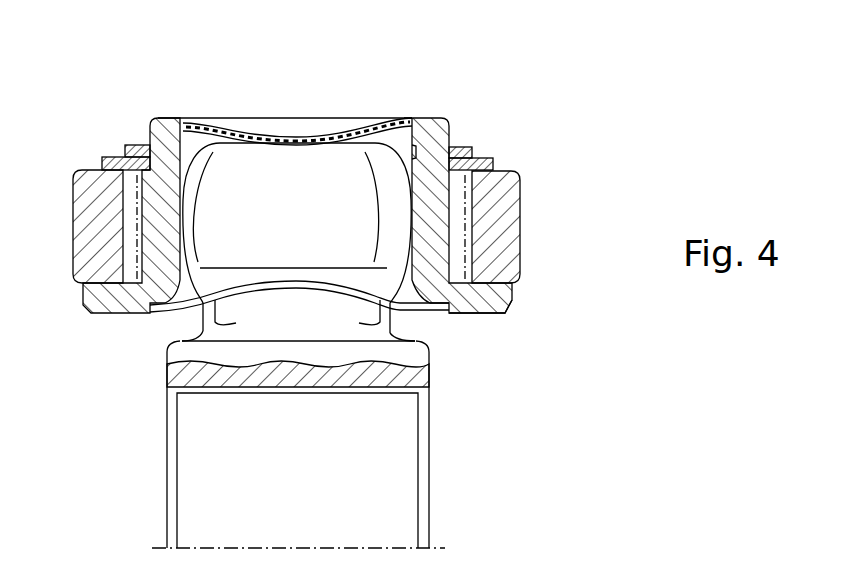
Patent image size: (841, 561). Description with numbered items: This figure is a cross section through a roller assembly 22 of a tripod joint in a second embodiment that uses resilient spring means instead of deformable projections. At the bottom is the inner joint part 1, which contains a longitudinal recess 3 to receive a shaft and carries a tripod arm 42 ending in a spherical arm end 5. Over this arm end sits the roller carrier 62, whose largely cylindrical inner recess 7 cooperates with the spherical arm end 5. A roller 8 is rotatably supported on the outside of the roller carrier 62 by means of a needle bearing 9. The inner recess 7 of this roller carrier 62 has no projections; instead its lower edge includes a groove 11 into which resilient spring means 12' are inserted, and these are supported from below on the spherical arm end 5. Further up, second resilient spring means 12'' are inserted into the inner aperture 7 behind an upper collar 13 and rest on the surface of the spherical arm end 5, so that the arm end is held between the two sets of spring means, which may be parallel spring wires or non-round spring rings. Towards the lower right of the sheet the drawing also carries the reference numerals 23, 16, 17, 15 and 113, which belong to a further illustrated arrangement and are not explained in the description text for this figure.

The roller assembly 22 is at (166, 85).
The roller carrier 62 is at (438, 132).
The upper collar 13 is at (412, 120).
The inner recess 7 is at (413, 152).
The roller 8 is at (512, 175).
The needle bearing 9 is at (463, 218).
The groove 11 is at (473, 318).
The resilient spring means 12' is at (297, 104).
The spherical arm end 5 is at (385, 233).
The second resilient spring means 12'' is at (316, 335).
The tripod arm 42 is at (200, 329).
The inner joint part 1 is at (167, 373).
The longitudinal recess 3 is at (387, 397).
The second ball joint assembly 23 is at (593, 532).
The component 16 is at (637, 560).
The component 17 is at (735, 560).
The component 15 is at (773, 560).
The component 11_3 113 is at (828, 560).